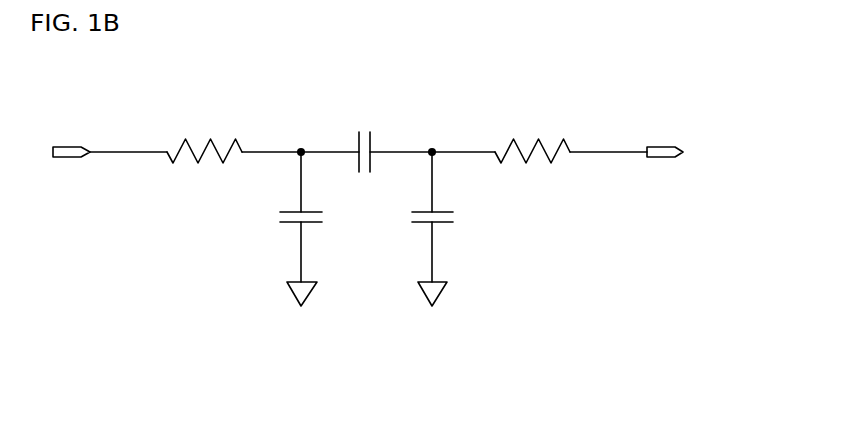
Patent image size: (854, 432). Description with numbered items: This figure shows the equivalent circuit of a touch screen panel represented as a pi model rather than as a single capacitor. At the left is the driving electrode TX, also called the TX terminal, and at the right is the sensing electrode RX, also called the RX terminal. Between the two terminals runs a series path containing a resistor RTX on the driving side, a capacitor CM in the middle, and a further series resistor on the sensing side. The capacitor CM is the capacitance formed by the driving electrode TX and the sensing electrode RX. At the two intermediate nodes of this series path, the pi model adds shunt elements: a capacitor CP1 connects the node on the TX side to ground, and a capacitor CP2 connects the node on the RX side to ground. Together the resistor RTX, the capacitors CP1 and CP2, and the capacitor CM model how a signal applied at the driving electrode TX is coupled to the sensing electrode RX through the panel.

The driving electrode TX is at (54, 153).
The sensing electrode RX is at (688, 153).
The resistor RTX is at (368, 133).
The capacitor CM is at (362, 137).
The capacitor CP1 is at (278, 229).
The capacitor CP2 is at (452, 229).